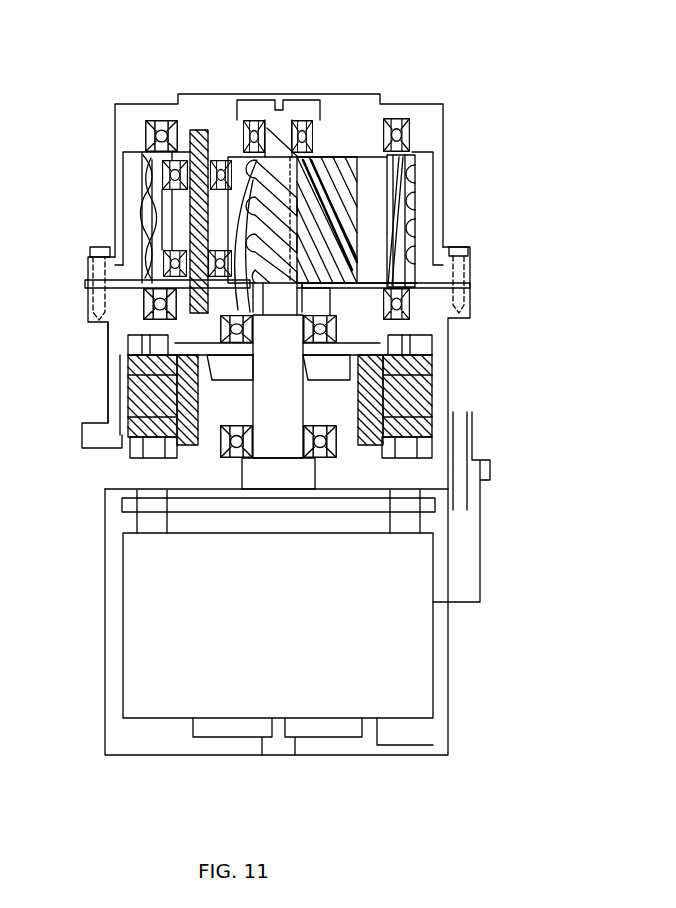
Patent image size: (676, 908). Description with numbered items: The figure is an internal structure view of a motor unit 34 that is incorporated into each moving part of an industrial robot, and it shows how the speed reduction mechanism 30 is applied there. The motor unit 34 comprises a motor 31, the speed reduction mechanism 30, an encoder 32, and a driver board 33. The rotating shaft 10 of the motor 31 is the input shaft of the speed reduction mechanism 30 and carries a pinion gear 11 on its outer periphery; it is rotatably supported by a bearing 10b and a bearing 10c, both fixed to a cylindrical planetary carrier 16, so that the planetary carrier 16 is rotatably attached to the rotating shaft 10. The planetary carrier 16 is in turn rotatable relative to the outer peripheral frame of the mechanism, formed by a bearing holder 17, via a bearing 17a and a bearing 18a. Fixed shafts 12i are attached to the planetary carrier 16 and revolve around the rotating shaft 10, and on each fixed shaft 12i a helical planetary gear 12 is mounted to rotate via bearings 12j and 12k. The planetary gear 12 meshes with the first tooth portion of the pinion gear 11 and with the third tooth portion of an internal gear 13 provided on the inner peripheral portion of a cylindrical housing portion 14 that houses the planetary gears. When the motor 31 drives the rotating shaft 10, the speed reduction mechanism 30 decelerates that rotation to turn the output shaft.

The rotating shaft 10 is at (290, 462).
The bearing 10b is at (295, 118).
The bearing 10c is at (335, 330).
The pinion gear 11 is at (330, 232).
The planetary gear 12 is at (152, 196).
The fixed shaft 12i is at (198, 128).
The bearing 12j is at (162, 172).
The bearing 12k is at (165, 272).
The internal gear 13 is at (212, 230).
The housing portion 14 is at (140, 240).
The planetary carrier 16 is at (352, 122).
The bearing holder 17 is at (424, 139).
The bearing 17a is at (395, 118).
The bearing 18a is at (152, 298).
The speed reduction mechanism 30 is at (448, 185).
The motor 31 is at (403, 391).
The encoder 32 is at (290, 530).
The driver board 33 is at (433, 655).
The motor unit 34 is at (465, 62).